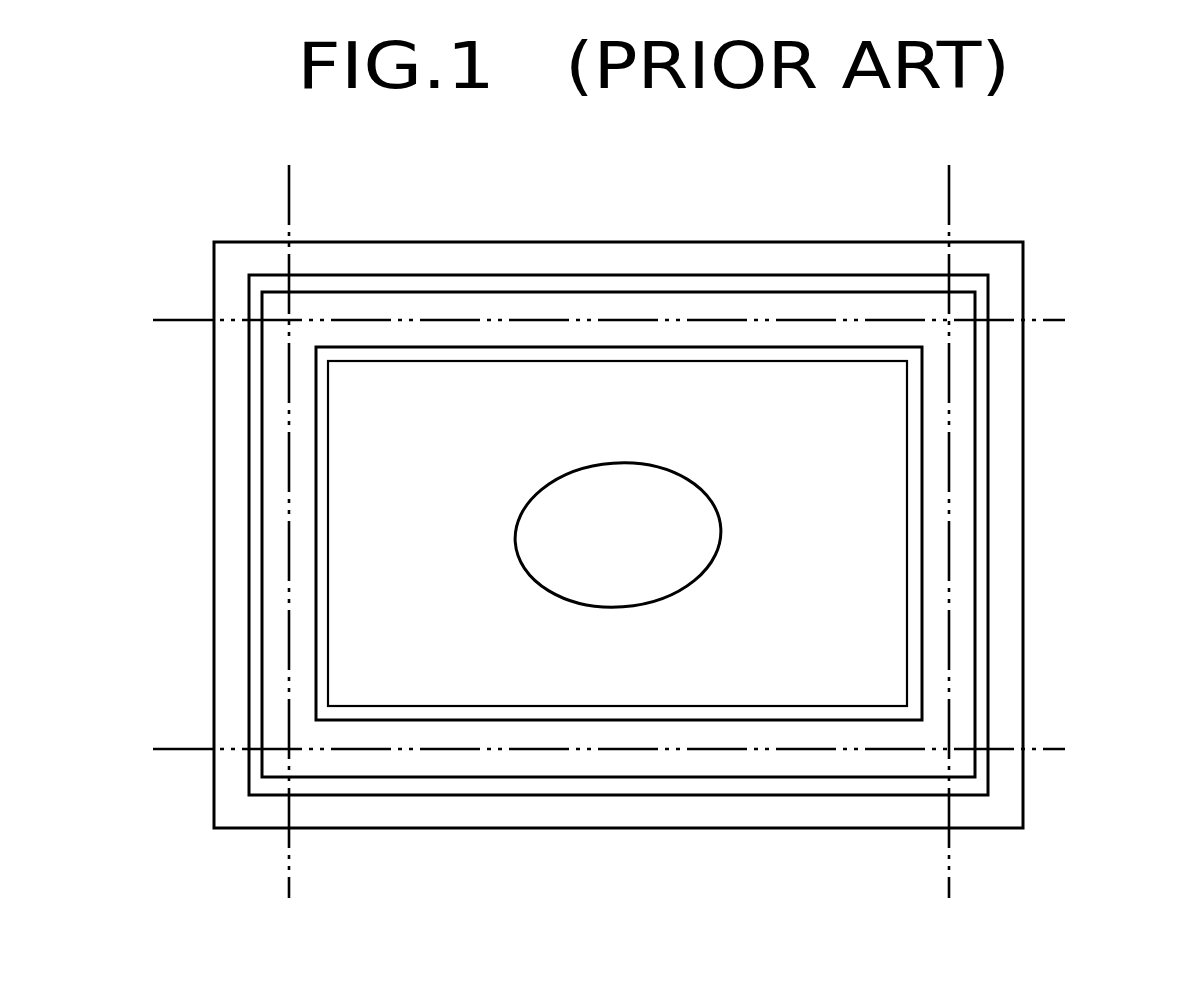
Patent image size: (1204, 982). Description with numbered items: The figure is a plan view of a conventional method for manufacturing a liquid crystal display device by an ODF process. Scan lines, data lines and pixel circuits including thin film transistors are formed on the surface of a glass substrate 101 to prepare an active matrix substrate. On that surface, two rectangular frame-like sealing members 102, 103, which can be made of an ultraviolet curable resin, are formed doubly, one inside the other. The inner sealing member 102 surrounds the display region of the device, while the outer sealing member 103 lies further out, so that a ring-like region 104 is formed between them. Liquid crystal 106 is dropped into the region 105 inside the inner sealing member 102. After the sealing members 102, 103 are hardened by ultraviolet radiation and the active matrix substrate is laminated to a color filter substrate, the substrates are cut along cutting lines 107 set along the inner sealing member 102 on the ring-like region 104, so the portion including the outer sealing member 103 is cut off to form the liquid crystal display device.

The glass substrate 101 is at (1000, 387).
The sealing member 102 is at (913, 437).
The sealing member 103 is at (980, 497).
The ring-like region 104 is at (957, 563).
The region 105 is at (878, 627).
The liquid crystal 106 is at (595, 575).
The cutting lines 107 is at (290, 192).